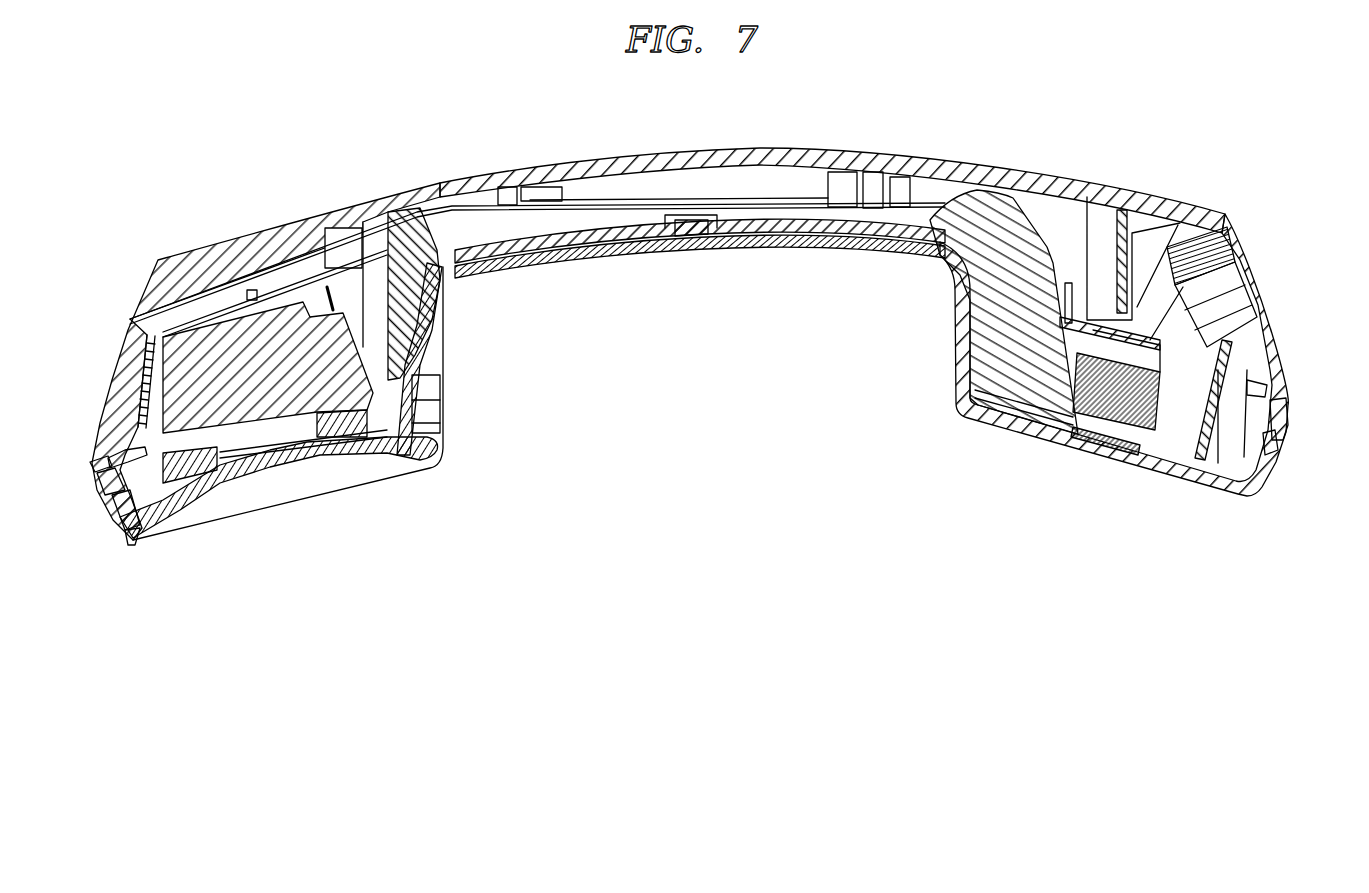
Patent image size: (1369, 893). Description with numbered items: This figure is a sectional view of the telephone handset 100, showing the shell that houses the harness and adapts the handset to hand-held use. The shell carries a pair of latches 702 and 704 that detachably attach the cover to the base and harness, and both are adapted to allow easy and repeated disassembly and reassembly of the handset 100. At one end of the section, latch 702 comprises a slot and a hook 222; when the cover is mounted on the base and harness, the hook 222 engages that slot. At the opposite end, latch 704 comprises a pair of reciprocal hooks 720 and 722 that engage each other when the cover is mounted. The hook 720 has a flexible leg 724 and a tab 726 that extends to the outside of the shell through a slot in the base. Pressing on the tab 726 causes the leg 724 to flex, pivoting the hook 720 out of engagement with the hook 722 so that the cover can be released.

The telephone handset 100 is at (690, 344).
The hook 720 is at (110, 452).
The tab 726 is at (90, 462).
The latch 704 is at (97, 473).
The hook 722 is at (115, 497).
The flexible leg 724 is at (130, 540).
The hook 222 is at (1280, 412).
The latch 702 is at (1270, 447).